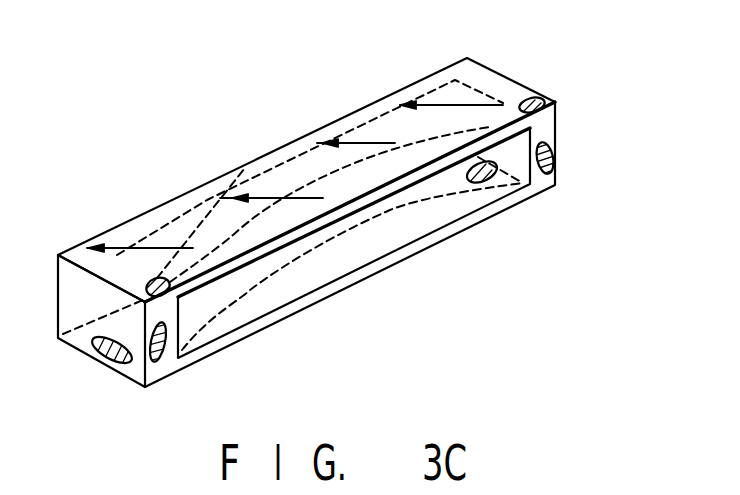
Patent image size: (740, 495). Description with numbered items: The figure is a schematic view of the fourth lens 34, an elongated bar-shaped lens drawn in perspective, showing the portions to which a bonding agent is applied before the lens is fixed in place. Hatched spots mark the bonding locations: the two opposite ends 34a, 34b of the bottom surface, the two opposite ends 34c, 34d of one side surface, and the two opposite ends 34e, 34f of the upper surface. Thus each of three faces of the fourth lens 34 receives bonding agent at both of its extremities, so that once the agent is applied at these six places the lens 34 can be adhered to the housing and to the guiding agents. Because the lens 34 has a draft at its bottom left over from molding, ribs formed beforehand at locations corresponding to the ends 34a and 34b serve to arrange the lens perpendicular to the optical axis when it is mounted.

The fourth lens 34 is at (498, 70).
The end of bottom surface 34a is at (505, 186).
The end of bottom surface 34b is at (95, 360).
The end of side surface 34c is at (553, 162).
The end of side surface 34d is at (164, 360).
The end of upper surface 34e is at (537, 97).
The end of upper surface 34f is at (155, 279).